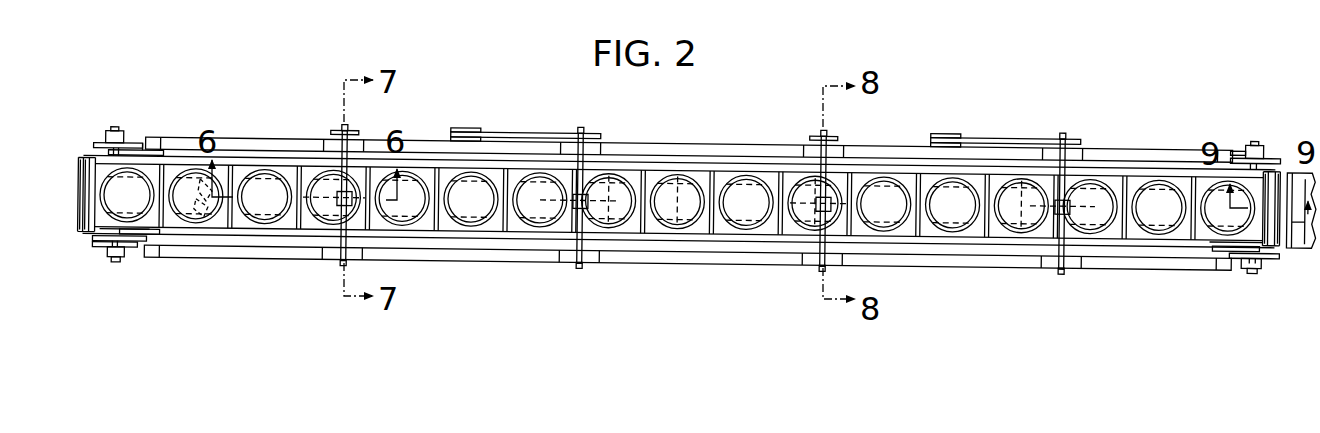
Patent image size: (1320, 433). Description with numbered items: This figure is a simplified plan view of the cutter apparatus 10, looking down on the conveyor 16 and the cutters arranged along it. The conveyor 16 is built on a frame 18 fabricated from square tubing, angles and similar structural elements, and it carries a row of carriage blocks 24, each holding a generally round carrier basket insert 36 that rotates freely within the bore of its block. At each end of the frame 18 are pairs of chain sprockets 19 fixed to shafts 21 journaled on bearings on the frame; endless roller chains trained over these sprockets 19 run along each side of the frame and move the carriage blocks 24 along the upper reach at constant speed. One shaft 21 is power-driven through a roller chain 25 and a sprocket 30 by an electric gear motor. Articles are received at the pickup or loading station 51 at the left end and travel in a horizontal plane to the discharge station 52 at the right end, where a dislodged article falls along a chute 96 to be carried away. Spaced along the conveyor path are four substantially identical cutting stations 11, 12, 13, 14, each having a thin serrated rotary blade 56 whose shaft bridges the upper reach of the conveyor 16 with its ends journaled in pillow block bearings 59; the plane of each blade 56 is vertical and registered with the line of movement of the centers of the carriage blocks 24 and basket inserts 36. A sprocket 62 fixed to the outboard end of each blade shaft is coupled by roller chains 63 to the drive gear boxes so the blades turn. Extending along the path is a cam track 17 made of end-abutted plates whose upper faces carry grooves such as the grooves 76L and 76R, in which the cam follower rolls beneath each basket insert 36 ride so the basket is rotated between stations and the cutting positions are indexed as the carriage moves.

The cutter apparatus 10 is at (926, 98).
The cutting station 11 is at (332, 127).
The cutting station 12 is at (609, 146).
The cutting station 13 is at (850, 133).
The cutting station 14 is at (1083, 130).
The conveyor 16 is at (700, 144).
The cam track 17 is at (240, 226).
The frame 18 is at (690, 259).
The chain sprockets 19 is at (95, 157).
The shaft 21 is at (121, 156).
The carriage block 24 is at (628, 240).
The roller chain 25 is at (136, 243).
The sprocket 30 is at (116, 258).
The carrier basket insert 36 is at (476, 230).
The pickup station 51 is at (202, 113).
The discharge station 52 is at (1190, 107).
The rotary blade 56 is at (800, 214).
The pillow block bearings 59 is at (566, 252).
The sprocket 62 is at (590, 135).
The roller chains 63 is at (520, 128).
The groove 76L is at (241, 186).
The groove 76R is at (208, 233).
The chute 96 is at (1305, 250).